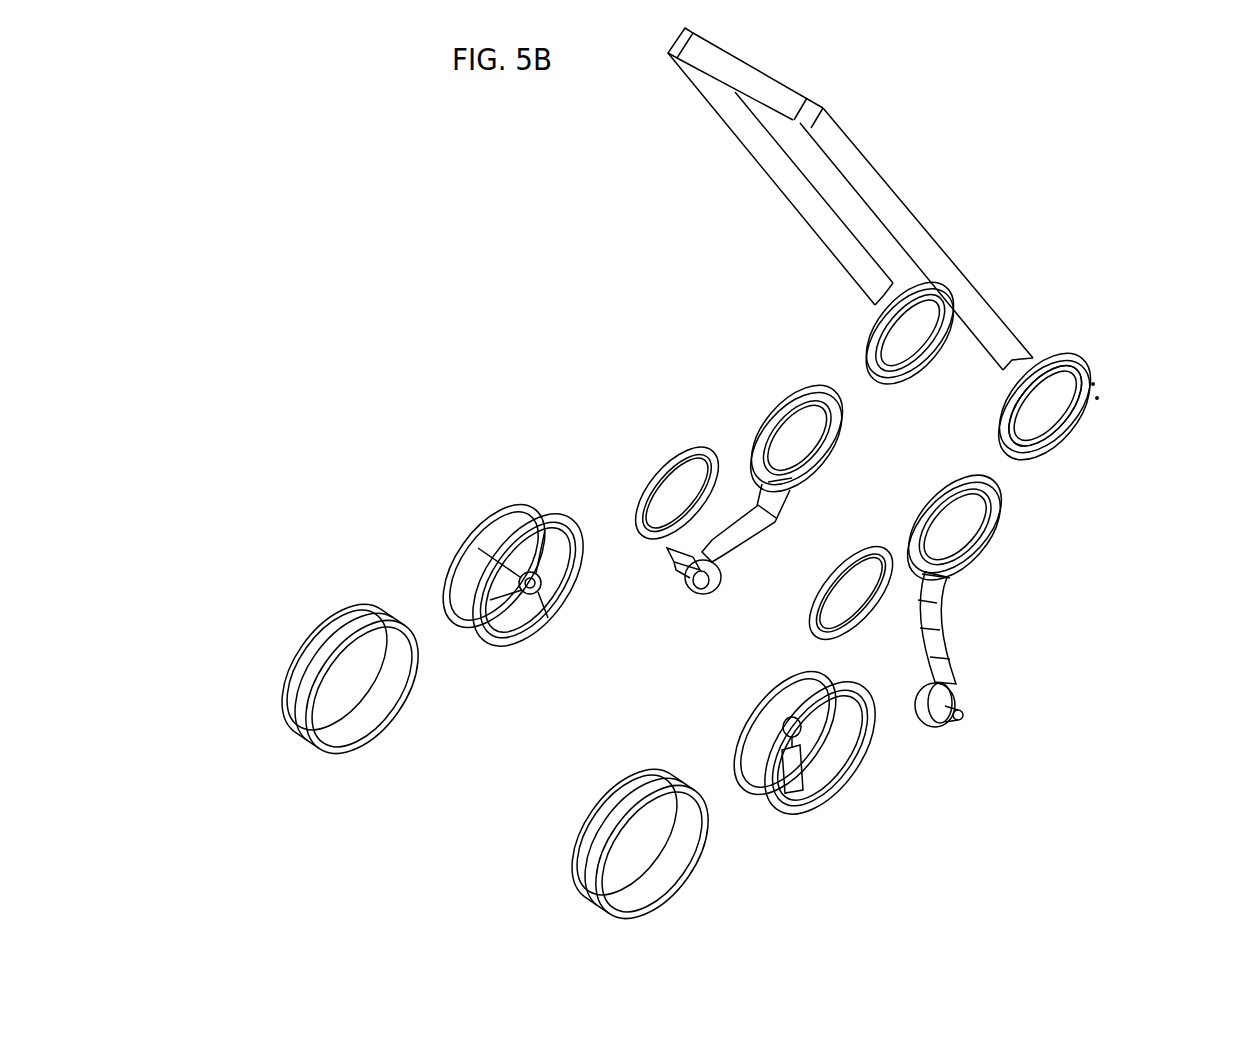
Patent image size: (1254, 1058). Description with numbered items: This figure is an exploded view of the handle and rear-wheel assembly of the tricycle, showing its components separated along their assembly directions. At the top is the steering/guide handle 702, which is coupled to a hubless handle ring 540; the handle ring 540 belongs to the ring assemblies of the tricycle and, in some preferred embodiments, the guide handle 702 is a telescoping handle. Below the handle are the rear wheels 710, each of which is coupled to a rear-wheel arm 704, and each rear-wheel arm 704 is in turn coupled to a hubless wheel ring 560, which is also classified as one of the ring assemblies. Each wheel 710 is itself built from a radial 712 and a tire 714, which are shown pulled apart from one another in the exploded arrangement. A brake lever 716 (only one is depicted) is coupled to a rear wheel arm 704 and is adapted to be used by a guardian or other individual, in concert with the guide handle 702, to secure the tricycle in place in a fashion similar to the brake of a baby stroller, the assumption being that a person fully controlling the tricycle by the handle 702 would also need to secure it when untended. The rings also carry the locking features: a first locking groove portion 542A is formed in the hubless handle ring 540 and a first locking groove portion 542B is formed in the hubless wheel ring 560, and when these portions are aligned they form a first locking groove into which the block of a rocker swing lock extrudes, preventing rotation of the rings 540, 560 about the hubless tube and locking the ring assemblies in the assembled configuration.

The steering/guide handle 702 is at (813, 231).
The hubless handle ring 540 is at (868, 337).
The first locking groove portion 542A is at (1093, 383).
The first locking groove portion 542B is at (1000, 507).
The hubless wheel ring 560 is at (695, 505).
The rear-wheel arm 704 is at (938, 642).
The rear wheel 710 is at (398, 636).
The radial 712 is at (447, 560).
The tire 714 is at (328, 755).
The brake lever 716 is at (677, 572).